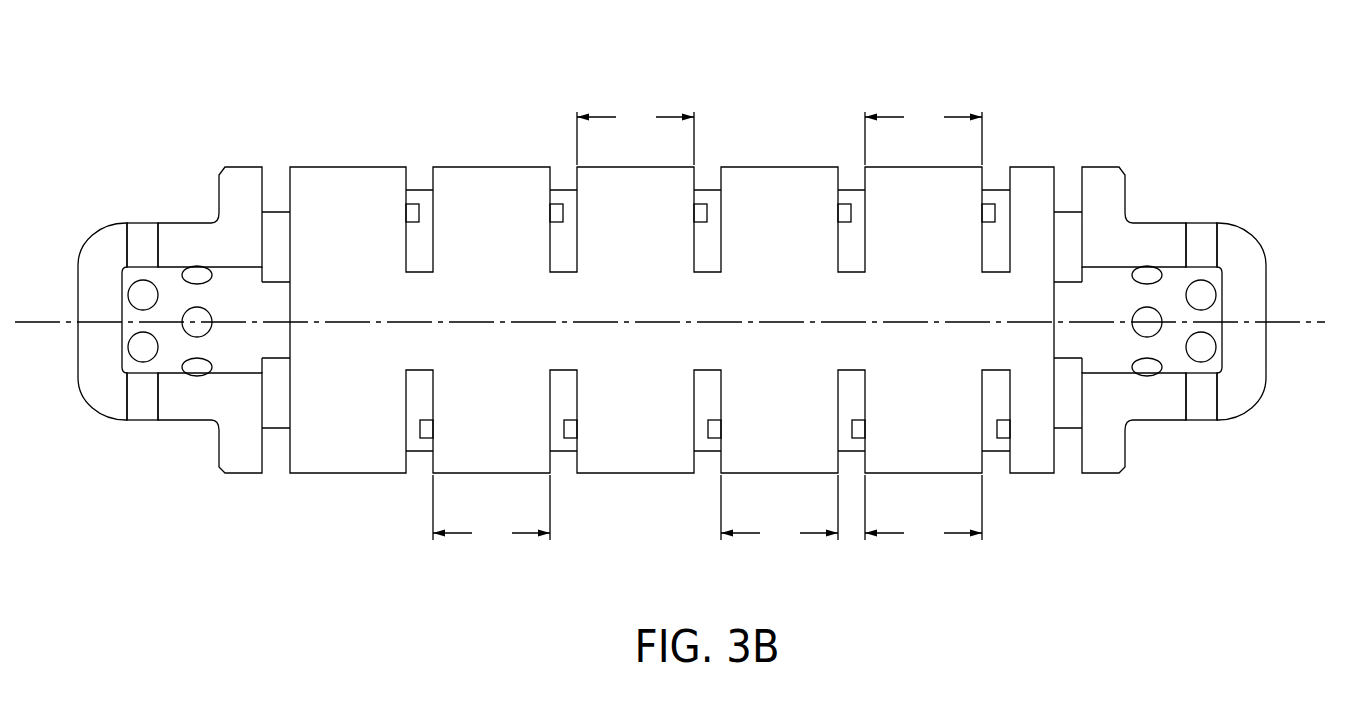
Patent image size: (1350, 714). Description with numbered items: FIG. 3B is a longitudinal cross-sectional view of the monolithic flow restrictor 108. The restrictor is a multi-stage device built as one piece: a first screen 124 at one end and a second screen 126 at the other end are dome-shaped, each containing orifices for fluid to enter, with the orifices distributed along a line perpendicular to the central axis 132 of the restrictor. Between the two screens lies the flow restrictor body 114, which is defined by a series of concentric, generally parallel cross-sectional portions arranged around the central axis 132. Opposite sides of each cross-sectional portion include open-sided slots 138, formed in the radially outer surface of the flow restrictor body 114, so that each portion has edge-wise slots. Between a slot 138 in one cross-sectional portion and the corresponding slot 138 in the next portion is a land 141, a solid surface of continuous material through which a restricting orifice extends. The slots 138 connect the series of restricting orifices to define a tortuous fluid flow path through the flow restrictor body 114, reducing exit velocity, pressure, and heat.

The monolithic flow restrictor 108 is at (679, 300).
The flow restrictor body 114 is at (672, 350).
The first screen 124 is at (1198, 412).
The second screen 126 is at (88, 246).
The central axis 132 is at (1304, 319).
The open-sided slots 138 is at (422, 181).
The land 141 is at (707, 325).